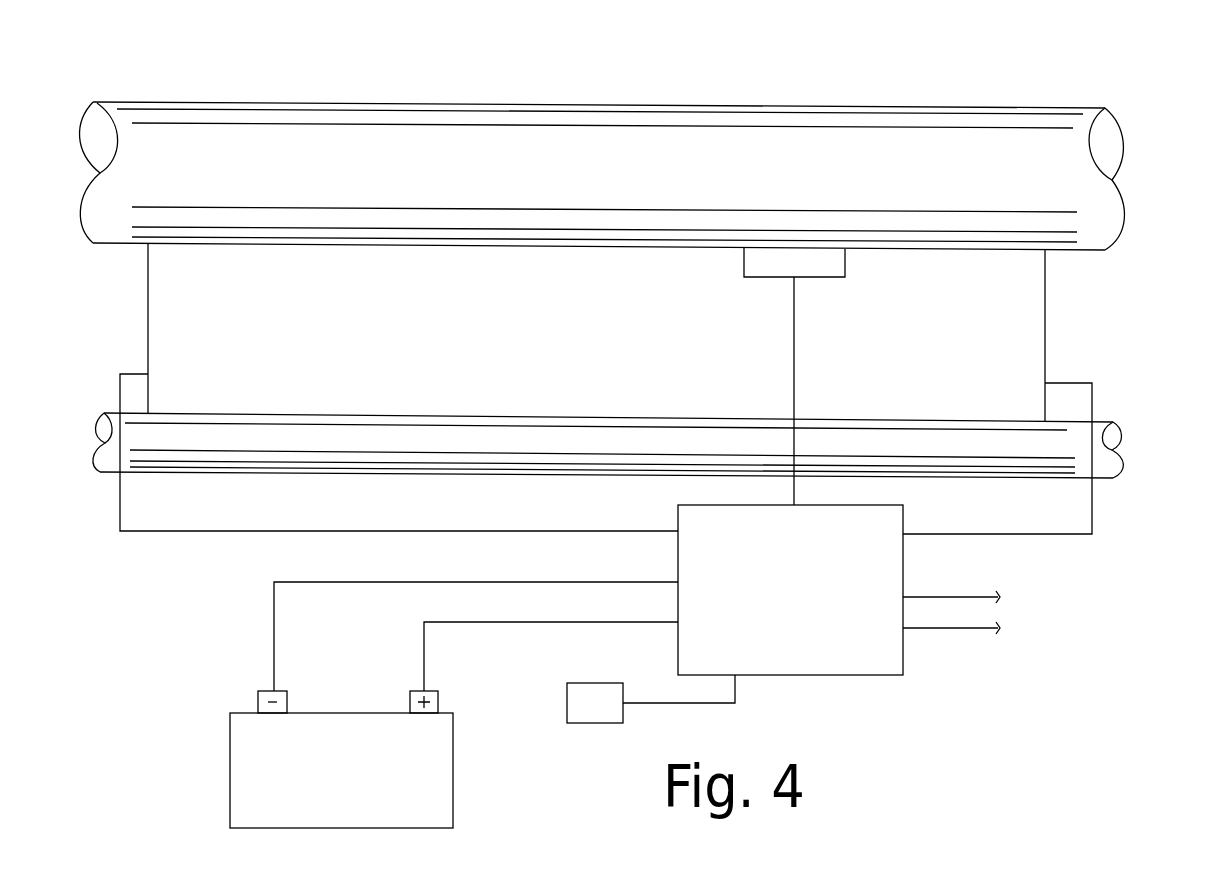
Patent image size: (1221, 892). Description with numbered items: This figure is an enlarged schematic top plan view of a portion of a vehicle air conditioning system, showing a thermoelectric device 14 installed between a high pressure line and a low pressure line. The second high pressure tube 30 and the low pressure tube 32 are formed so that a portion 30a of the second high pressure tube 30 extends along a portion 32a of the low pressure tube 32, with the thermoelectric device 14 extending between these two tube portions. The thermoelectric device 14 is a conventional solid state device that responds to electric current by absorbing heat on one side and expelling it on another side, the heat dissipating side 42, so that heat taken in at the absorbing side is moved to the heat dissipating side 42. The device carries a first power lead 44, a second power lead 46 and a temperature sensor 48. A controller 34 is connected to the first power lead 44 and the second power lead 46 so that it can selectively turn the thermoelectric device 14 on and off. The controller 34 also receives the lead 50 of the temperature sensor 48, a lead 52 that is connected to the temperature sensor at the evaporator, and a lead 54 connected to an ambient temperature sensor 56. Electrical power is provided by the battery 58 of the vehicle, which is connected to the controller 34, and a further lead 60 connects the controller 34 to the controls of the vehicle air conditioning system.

The thermoelectric device 14 is at (1020, 325).
The second high pressure tube 30 is at (1113, 437).
The portion of the second high pressure tube 30a is at (315, 440).
The low pressure tube 32 is at (1105, 147).
The portion of the low pressure tube 32a is at (612, 148).
The controller 34 is at (838, 658).
The heat dissipating side 42 is at (432, 240).
The first power lead 44 is at (120, 393).
The second power lead 46 is at (1092, 400).
The temperature sensor 48 is at (823, 265).
The lead of the temperature sensor 50 is at (794, 365).
The lead 52 is at (952, 590).
The lead 54 is at (678, 703).
The ambient temperature sensor 56 is at (597, 712).
The battery 58 is at (437, 775).
The lead 60 is at (962, 633).